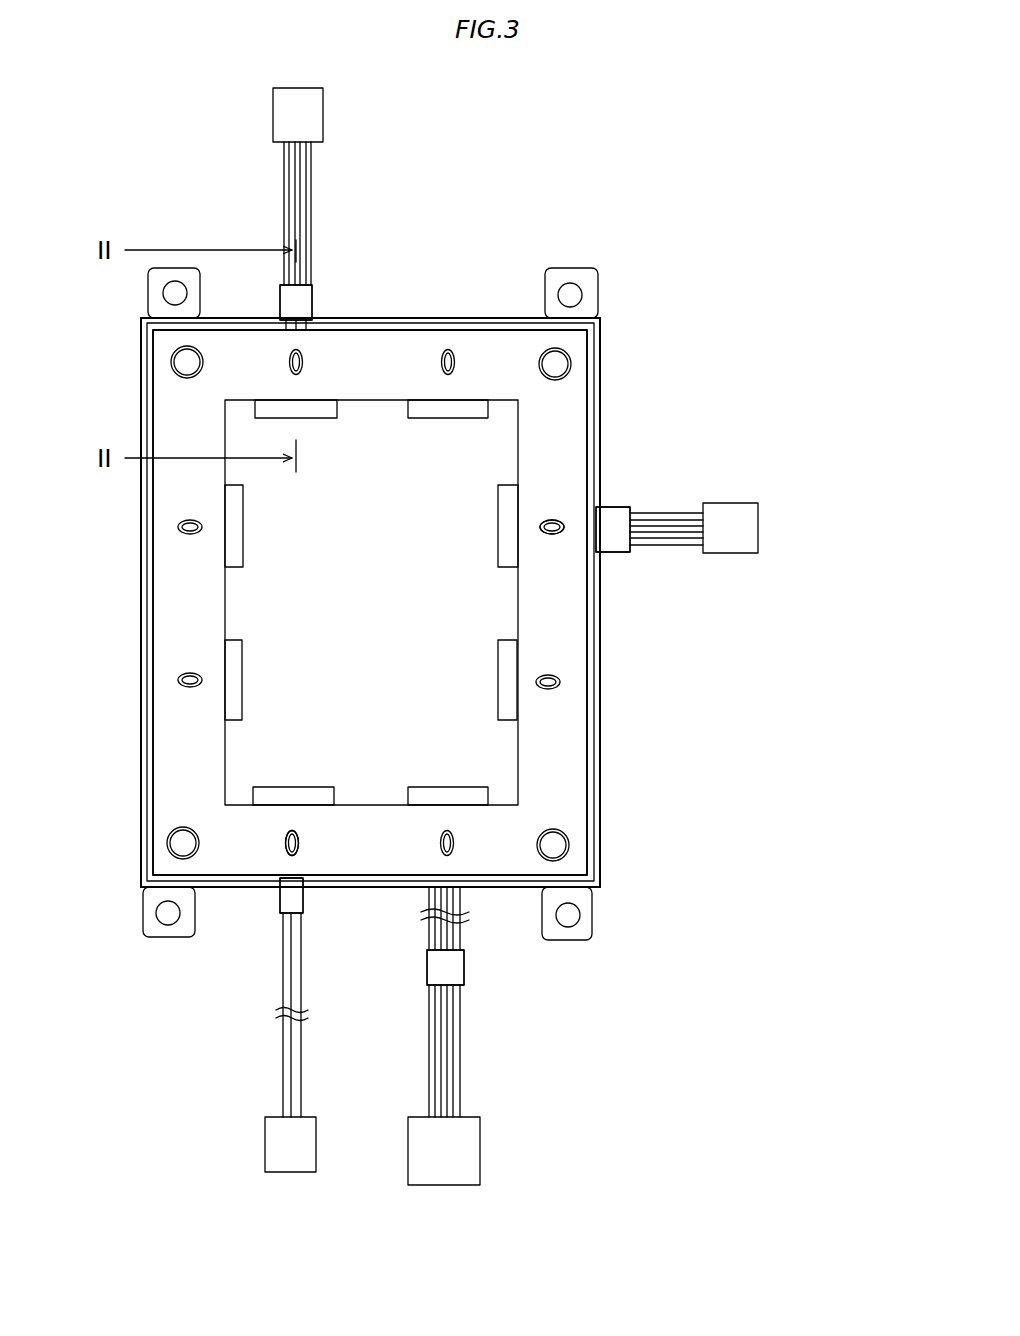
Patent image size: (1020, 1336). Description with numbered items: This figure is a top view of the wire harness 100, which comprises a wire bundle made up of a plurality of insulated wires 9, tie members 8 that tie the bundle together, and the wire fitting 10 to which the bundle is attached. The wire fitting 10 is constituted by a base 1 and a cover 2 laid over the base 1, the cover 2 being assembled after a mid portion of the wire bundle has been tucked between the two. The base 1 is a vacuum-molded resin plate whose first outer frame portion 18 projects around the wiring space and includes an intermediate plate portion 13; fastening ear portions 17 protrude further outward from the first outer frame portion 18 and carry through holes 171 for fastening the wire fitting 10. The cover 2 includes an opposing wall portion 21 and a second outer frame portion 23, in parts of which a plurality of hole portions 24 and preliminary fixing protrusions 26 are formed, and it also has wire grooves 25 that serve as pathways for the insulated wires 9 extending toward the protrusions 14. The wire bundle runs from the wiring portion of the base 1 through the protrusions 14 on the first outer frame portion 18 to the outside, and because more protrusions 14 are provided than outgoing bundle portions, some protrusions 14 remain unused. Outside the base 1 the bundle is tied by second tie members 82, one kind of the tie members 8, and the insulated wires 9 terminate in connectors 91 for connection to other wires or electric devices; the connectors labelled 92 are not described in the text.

The wire harness 100 is at (604, 165).
The wire fitting 10 is at (316, 602).
The base 1 is at (143, 716).
The cover 2 is at (143, 781).
The intermediate plate portion 13 is at (597, 720).
The first outer frame portion 18 is at (370, 602).
The second outer frame portion 23 is at (570, 797).
The opposing wall portion 21 is at (428, 513).
The wire grooves 25 is at (243, 498).
The preliminary fixing protrusions 26 is at (182, 366).
The hole portions 24 is at (553, 530).
The protrusions 14 is at (553, 525).
The fastening ear portions 17 is at (565, 942).
The through holes 171 is at (575, 915).
The tie members 8 is at (315, 291).
The second tie members 82 is at (455, 635).
The insulated wires 9 is at (308, 170).
The connectors 91 is at (323, 115).
The external connectors 92 is at (758, 512).